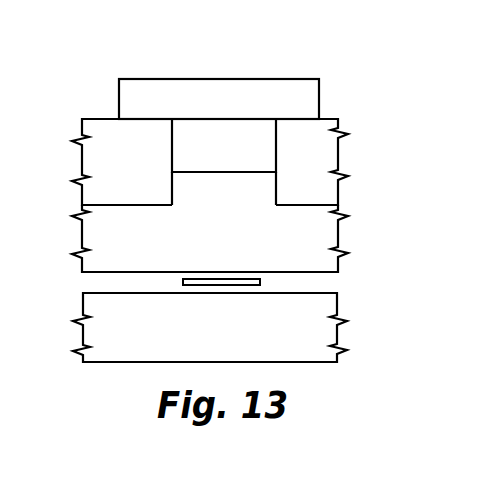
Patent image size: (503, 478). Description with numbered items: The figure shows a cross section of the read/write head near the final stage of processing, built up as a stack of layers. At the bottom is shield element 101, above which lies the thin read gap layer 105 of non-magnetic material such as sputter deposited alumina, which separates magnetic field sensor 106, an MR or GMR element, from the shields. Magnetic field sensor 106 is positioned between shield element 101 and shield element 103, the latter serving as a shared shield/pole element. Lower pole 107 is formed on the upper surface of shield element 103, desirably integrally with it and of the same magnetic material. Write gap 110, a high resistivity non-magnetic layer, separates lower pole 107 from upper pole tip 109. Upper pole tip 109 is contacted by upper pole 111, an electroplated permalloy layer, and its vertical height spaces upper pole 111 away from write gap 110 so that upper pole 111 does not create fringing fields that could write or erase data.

The shield element 101 is at (312, 338).
The shield element 103 is at (338, 224).
The read gap layer 105 is at (328, 285).
The magnetic field sensor 106 is at (240, 287).
The lower pole 107 is at (278, 198).
The upper pole tip 109 is at (242, 151).
The write gap 110 is at (172, 177).
The upper pole 111 is at (142, 88).